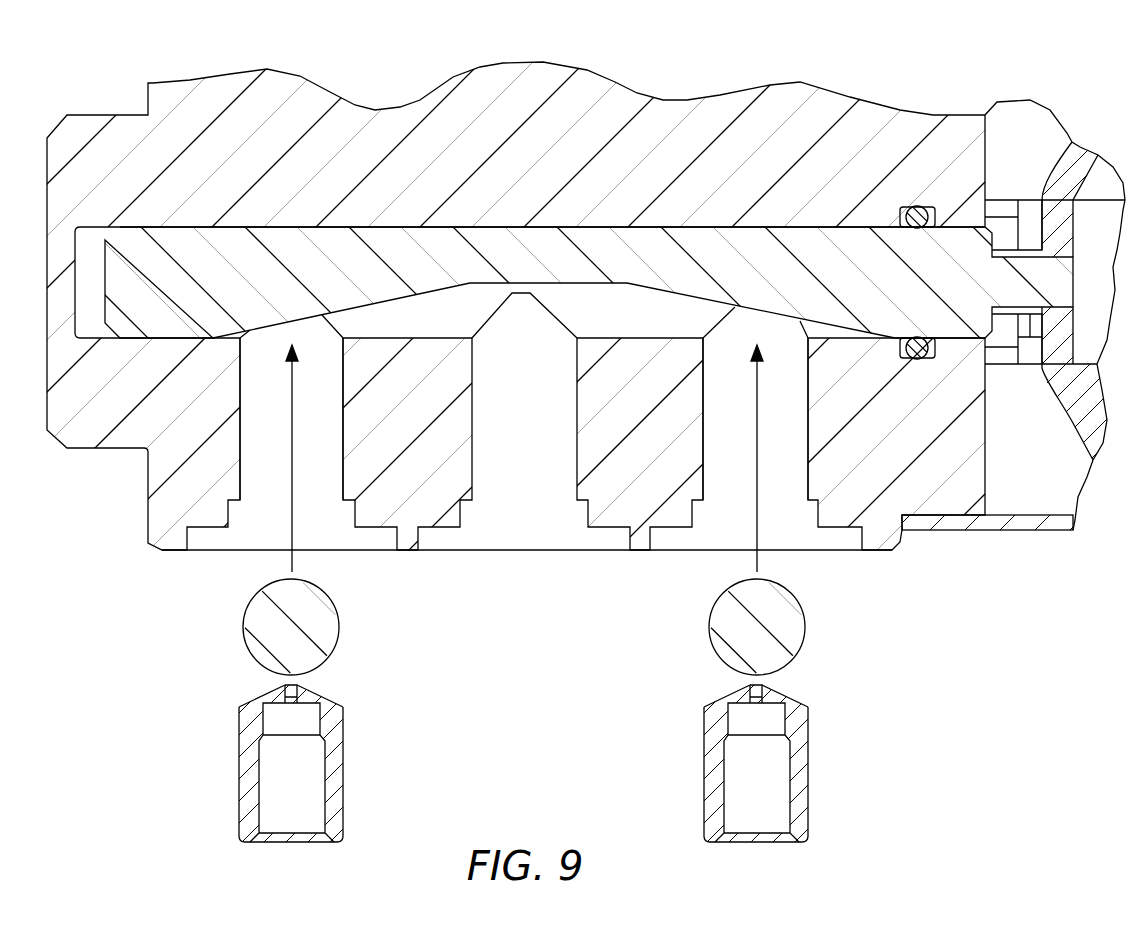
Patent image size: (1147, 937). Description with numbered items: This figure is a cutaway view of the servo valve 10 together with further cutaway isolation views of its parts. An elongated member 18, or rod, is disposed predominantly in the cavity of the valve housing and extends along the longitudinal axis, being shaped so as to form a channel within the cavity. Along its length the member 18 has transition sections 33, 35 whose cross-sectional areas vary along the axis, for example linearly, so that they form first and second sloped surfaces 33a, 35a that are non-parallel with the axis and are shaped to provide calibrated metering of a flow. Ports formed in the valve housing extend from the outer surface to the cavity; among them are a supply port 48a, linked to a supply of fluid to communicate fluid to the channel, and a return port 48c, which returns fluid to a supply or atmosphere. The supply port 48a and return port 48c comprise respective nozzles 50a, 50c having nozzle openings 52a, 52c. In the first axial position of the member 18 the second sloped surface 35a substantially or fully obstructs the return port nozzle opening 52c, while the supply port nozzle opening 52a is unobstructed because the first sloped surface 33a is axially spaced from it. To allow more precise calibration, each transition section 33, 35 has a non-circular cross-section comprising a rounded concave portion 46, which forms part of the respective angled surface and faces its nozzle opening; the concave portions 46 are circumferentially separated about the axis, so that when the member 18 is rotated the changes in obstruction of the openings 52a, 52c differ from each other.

The servo valve 10 is at (1079, 81).
The elongated member 18 is at (203, 247).
The first transition section 33 is at (328, 257).
The second transition section 35 is at (722, 258).
The first sloped surface 33a is at (383, 300).
The second sloped surface 35a is at (667, 297).
The supply port 48a is at (250, 418).
The return port 48c is at (800, 433).
The concave portion 46 is at (320, 667).
The supply port nozzle 50a is at (287, 755).
The return port nozzle 50c is at (752, 755).
The supply port nozzle opening 52a is at (285, 691).
The return port nozzle opening 52c is at (762, 691).